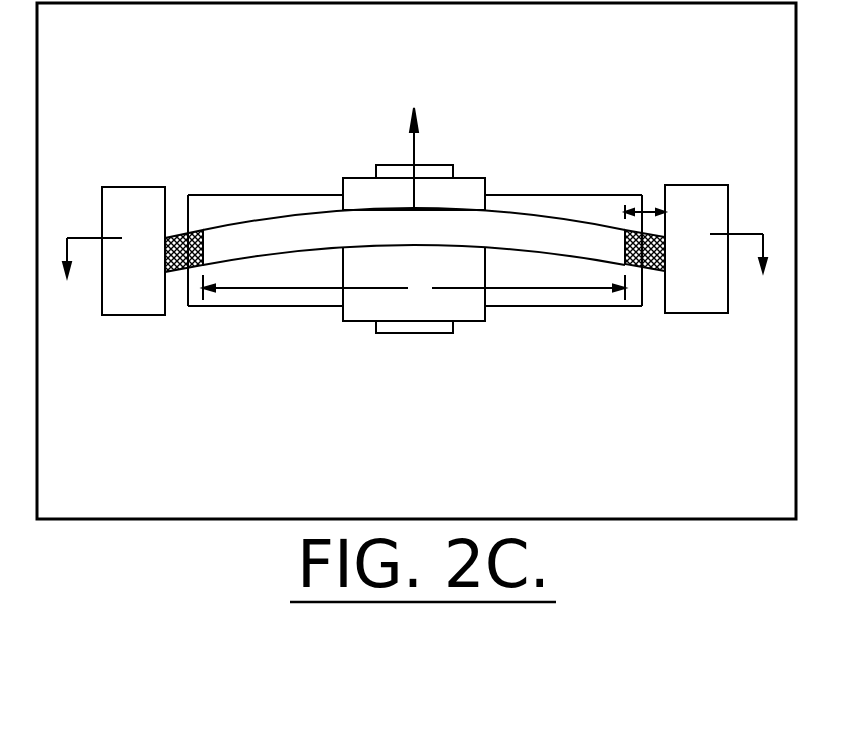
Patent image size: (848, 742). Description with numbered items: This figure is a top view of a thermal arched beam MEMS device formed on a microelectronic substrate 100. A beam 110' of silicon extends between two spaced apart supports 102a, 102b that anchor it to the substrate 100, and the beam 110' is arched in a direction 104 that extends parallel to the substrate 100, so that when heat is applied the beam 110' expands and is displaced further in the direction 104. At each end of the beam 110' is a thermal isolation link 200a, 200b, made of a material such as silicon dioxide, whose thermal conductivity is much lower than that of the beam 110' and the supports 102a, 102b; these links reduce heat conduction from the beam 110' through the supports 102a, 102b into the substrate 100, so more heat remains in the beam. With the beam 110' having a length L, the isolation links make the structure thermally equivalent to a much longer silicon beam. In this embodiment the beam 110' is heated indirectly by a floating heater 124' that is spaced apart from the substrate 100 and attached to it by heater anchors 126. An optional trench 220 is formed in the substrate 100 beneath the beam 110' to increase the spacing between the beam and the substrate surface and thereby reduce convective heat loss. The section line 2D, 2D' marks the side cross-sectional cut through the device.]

The microelectronic substrate 100 is at (112, 58).
The spaced apart support 102a is at (132, 186).
The spaced apart support 102b is at (697, 185).
The direction of arching 104 is at (414, 152).
The beam 110' is at (414, 198).
The floating heater 124' is at (356, 204).
The heater anchors 126 is at (438, 172).
The thermal isolation link 200a is at (175, 273).
The thermal isolation link 200b is at (656, 272).
The trench 220 is at (260, 195).
The beam length L is at (414, 287).
The section line 2D is at (85, 276).
The section line 2D' is at (748, 273).